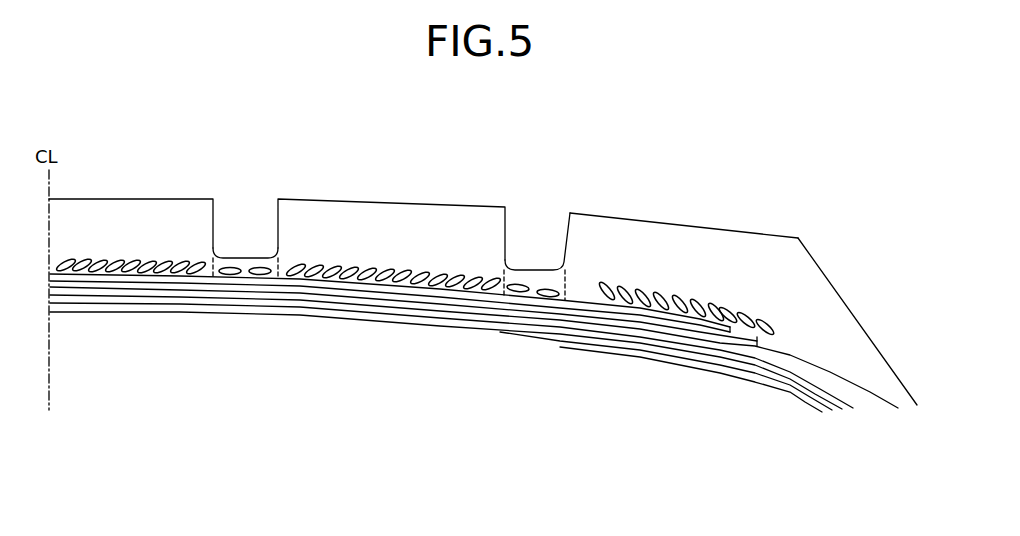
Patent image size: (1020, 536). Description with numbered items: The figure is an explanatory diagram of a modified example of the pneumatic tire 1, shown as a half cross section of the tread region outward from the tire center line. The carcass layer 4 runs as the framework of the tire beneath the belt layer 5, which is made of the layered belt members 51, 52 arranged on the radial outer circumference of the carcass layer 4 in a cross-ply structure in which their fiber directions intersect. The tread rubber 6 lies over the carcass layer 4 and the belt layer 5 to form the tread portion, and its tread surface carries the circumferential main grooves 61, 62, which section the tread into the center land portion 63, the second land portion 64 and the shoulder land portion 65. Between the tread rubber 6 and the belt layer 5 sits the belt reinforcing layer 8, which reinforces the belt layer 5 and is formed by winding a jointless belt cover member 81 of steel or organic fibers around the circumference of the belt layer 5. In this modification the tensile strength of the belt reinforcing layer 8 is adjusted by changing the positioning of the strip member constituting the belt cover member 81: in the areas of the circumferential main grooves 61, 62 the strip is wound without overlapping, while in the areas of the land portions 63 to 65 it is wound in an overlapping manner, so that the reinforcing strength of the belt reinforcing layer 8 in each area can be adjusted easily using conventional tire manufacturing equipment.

The pneumatic tire 1 is at (821, 170).
The carcass layer 4 is at (580, 333).
The belt layer 5 is at (700, 400).
The belt member 51 is at (699, 332).
The belt member 52 is at (667, 318).
The tread rubber 6 is at (831, 305).
The circumferential main groove 61 is at (243, 212).
The circumferential main groove 62 is at (534, 228).
The center land portion 63 is at (134, 212).
The second land portion 64 is at (383, 215).
The shoulder land portion 65 is at (640, 232).
The belt reinforcing layer 8 is at (785, 174).
The belt cover member 81 is at (700, 300).